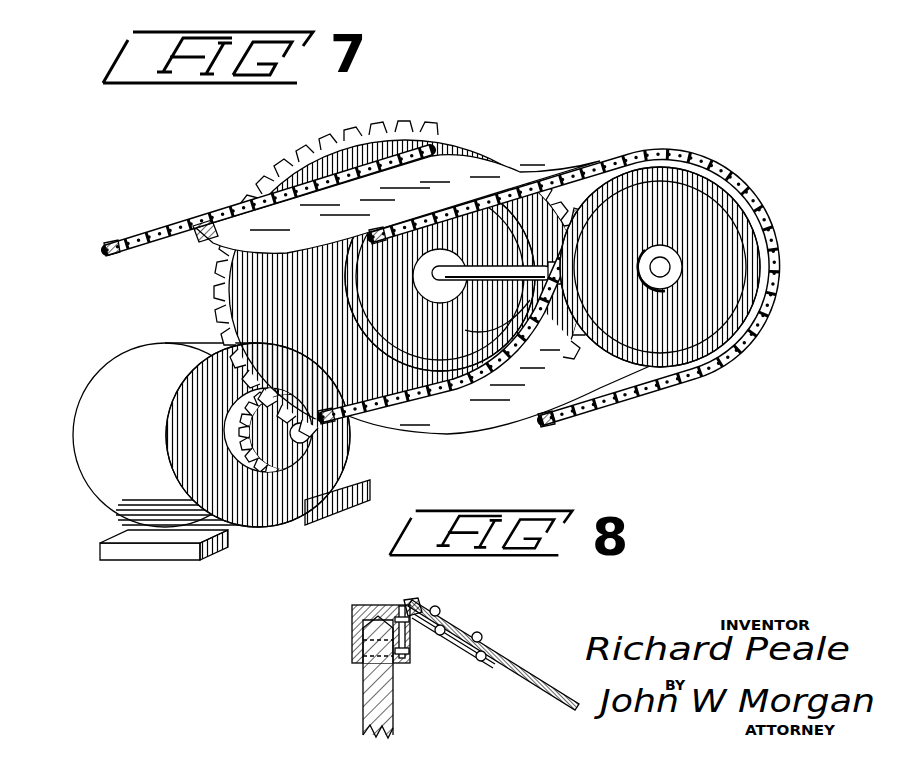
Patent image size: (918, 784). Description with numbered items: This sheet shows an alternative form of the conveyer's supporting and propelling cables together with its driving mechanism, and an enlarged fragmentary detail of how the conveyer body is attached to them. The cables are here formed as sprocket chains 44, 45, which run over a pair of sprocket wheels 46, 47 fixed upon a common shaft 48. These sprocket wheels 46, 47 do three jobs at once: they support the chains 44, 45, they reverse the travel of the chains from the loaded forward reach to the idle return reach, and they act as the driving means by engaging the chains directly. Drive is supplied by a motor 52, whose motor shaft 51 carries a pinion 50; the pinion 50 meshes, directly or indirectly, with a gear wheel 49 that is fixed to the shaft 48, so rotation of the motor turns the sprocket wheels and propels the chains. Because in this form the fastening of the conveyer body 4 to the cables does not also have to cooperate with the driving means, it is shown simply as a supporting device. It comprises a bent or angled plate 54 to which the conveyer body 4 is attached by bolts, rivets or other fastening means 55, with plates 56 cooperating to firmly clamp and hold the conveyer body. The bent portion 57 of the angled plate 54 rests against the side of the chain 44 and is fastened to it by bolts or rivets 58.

In FIG. 7, the conveyer body 4 is at (213, 243).
In FIG. 8, the conveyer body 4 is at (538, 686).
In FIG. 7, the sprocket chain 44 is at (176, 233).
In FIG. 8, the sprocket chain 44 is at (352, 609).
In FIG. 7, the sprocket chain 45 is at (602, 163).
In FIG. 7, the sprocket wheel 46 is at (478, 355).
In FIG. 8, the sprocket wheel 46 is at (363, 697).
In FIG. 7, the sprocket wheel 47 is at (756, 246).
In FIG. 7, the shaft 48 is at (508, 281).
In FIG. 7, the gear wheel 49 is at (333, 135).
In FIG. 7, the pinion 50 is at (340, 462).
In FIG. 7, the motor shaft 51 is at (296, 437).
In FIG. 7, the motor 52 is at (150, 343).
In FIG. 7, the bent or angled plate 54 is at (200, 224).
In FIG. 8, the bent or angled plate 54 is at (420, 608).
In FIG. 8, the fastening means 55 is at (441, 612).
In FIG. 8, the plates 56 is at (441, 636).
In FIG. 8, the bent portion 57 is at (416, 638).
In FIG. 8, the bolts or rivets 58 is at (401, 606).